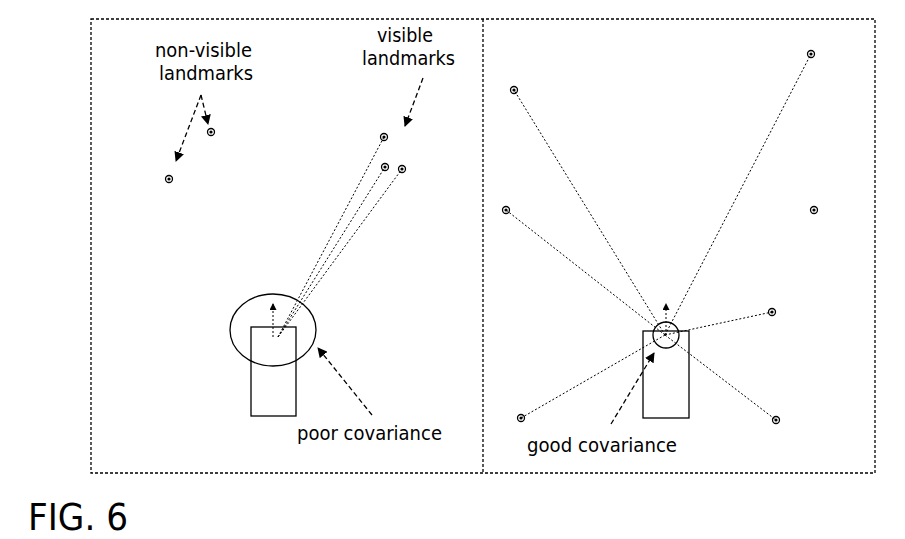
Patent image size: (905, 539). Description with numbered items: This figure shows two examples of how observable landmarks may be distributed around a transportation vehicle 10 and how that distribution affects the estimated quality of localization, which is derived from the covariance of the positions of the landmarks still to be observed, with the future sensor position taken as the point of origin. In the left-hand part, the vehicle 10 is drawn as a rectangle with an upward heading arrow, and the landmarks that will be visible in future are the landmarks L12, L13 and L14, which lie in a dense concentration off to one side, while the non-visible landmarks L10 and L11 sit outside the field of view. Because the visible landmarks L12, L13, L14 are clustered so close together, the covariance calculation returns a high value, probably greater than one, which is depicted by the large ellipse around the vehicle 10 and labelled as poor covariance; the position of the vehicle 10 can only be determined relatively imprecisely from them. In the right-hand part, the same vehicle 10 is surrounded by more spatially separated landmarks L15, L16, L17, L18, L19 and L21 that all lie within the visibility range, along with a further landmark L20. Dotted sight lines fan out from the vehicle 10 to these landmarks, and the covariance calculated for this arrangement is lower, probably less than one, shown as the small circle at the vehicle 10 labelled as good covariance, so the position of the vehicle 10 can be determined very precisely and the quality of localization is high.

The transportation vehicle 10 is at (250, 397).
The non-visible landmark L10 is at (172, 186).
The non-visible landmark L11 is at (214, 139).
The visible landmark L12 is at (407, 172).
The visible landmark L13 is at (390, 163).
The visible landmark L14 is at (381, 133).
The landmark L15 is at (520, 412).
The landmark L16 is at (507, 205).
The landmark L17 is at (515, 85).
The landmark L18 is at (781, 419).
The landmark L19 is at (777, 312).
The landmark L20 is at (812, 216).
The landmark L21 is at (807, 54).